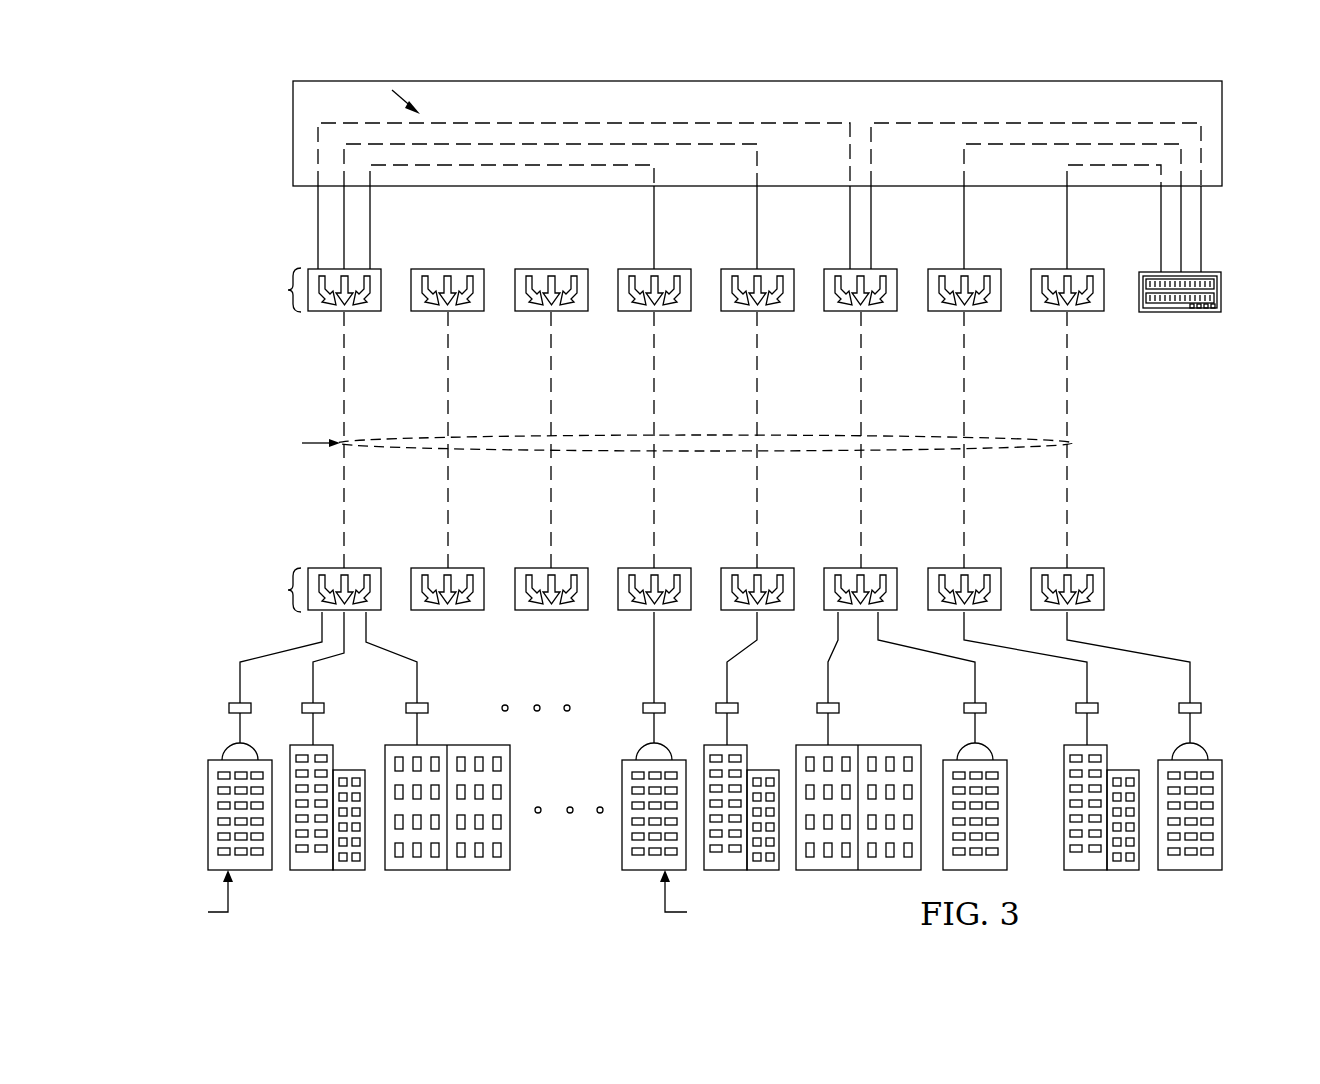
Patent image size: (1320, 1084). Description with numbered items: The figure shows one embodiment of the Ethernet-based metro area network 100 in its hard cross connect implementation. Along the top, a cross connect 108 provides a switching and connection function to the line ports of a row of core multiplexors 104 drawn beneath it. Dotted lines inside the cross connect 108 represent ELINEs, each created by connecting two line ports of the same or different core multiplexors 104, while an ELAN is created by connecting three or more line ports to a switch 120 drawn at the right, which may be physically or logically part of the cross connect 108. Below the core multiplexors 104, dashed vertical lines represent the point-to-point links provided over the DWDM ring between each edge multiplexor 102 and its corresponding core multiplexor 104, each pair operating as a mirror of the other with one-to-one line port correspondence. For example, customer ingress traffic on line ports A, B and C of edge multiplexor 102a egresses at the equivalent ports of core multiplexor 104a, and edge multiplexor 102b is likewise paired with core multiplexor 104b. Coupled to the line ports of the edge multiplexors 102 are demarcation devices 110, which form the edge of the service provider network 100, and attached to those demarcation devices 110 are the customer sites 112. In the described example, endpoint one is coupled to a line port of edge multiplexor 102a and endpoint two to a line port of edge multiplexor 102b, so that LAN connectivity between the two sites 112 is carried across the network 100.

The communications network system 100 is at (215, 150).
The cross connect 108 is at (1232, 128).
The core multiplexor 104a is at (328, 313).
The core multiplexor 104b is at (636, 313).
The core multiplexor 104 is at (1082, 313).
The switch 120 is at (1222, 292).
The edge multiplexor 102a is at (328, 567).
The edge multiplexor 102b is at (640, 613).
The edge multiplexor 102 is at (1104, 590).
The demarcation device 110 is at (229, 706).
The customer site 112 is at (207, 816).